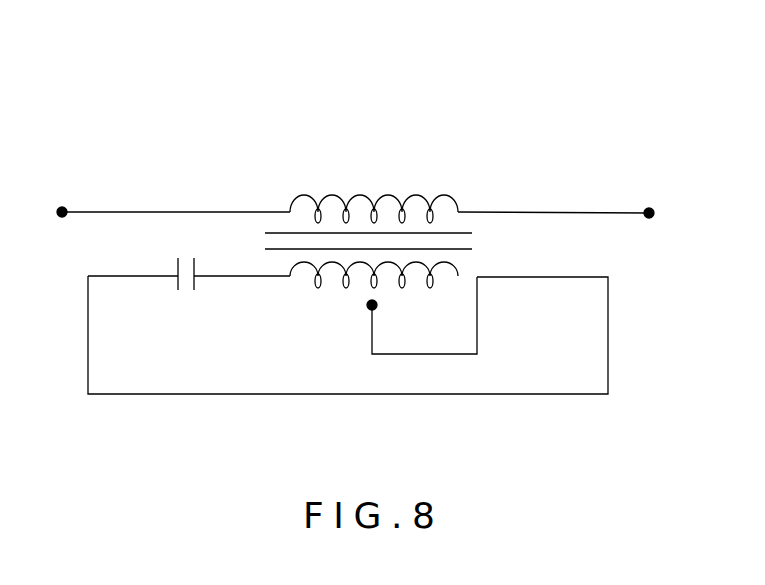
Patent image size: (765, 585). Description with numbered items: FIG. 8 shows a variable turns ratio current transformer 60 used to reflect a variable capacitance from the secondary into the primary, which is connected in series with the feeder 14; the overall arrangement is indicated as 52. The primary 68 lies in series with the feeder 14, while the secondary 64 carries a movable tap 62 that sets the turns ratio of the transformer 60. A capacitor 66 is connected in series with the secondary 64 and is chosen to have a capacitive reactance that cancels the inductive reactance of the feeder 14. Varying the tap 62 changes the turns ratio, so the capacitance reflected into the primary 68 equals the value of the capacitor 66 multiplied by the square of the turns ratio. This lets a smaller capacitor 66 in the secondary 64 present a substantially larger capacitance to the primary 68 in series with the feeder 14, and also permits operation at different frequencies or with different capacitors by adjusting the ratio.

The resonant circuit 52 is at (266, 96).
The feeder 14 is at (160, 212).
The current transformer 60 is at (458, 158).
The primary 68 is at (458, 205).
The secondary 64 is at (458, 272).
The capacitor 66 is at (178, 286).
The movable tap 62 is at (372, 305).